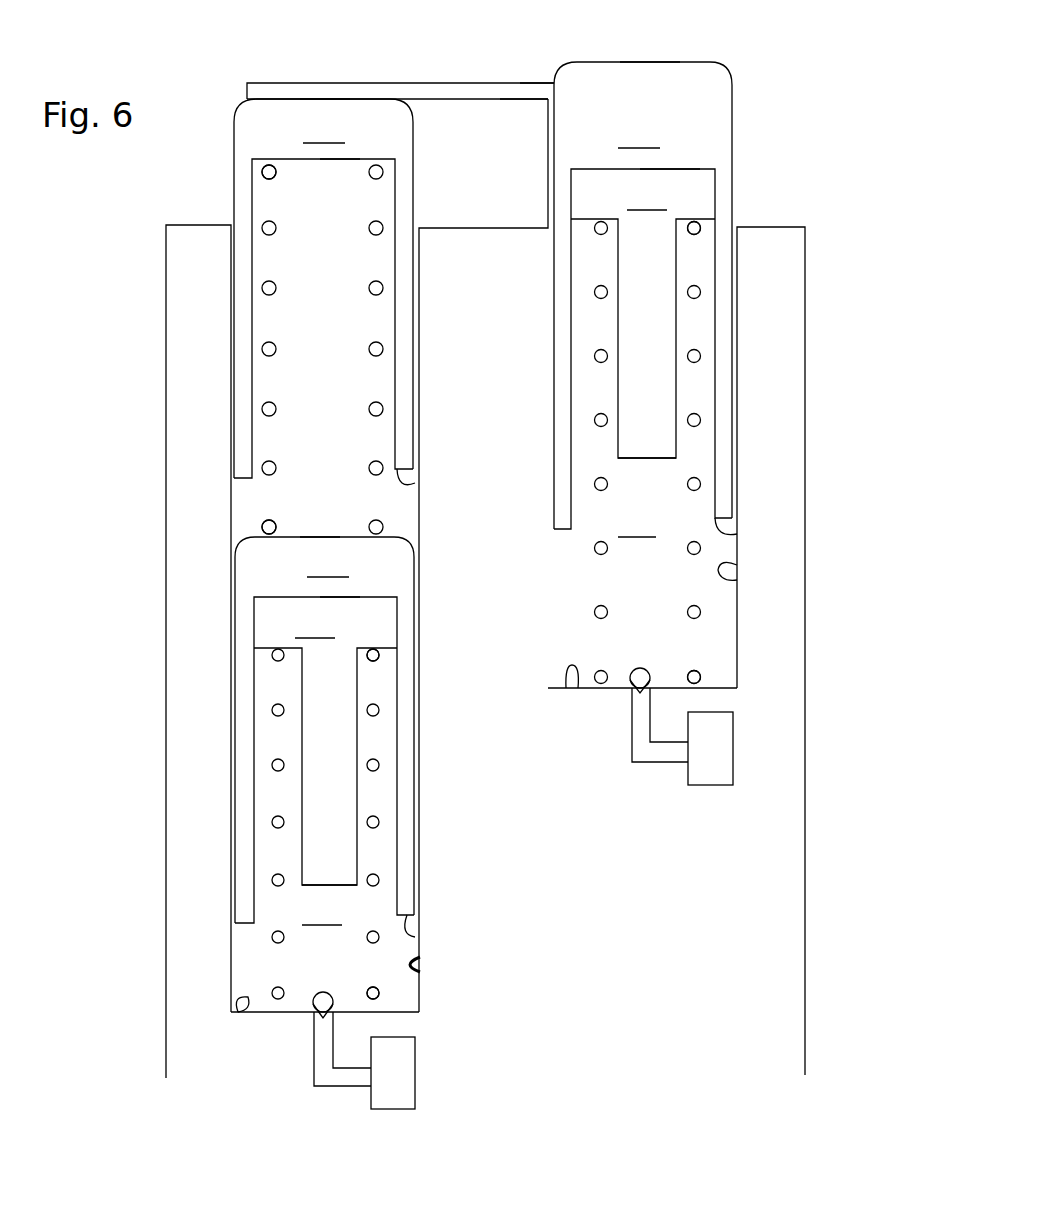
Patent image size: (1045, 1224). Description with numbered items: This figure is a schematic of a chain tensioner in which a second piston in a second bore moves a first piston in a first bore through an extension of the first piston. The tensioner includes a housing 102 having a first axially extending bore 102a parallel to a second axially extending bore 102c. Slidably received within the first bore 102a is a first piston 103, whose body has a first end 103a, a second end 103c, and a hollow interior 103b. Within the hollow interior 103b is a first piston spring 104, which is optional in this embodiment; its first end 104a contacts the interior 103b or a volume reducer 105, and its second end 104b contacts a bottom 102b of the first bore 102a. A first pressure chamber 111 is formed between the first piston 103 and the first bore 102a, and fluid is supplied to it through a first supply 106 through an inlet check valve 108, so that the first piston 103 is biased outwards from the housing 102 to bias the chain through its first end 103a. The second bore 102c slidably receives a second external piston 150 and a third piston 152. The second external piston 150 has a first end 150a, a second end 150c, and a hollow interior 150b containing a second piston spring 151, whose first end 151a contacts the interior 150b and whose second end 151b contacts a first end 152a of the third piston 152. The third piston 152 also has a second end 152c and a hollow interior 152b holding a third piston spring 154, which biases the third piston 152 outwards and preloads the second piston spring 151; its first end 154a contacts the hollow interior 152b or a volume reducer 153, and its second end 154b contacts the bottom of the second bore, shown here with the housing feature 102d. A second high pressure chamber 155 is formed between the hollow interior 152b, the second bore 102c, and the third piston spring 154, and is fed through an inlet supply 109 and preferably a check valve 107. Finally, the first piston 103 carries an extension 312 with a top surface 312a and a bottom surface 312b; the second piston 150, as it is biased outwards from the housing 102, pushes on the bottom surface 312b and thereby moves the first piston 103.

The housing 102 is at (804, 872).
The first axially extending bore 102a is at (740, 582).
The bottom of the first axially extending bore 102b is at (572, 690).
The second axially extending bore 102c is at (420, 972).
The housing notch 102d is at (245, 1000).
The first piston 103 is at (642, 375).
The first end of the first piston 103a is at (663, 60).
The hollow interior of the first piston 103b is at (673, 172).
The second end of the first piston 103c is at (737, 533).
The first piston spring 104 is at (698, 355).
The first end of the first piston spring 104a is at (700, 228).
The second end of the first piston spring 104b is at (700, 677).
The volume reducer 105 is at (643, 320).
The first supply 106 is at (637, 762).
The check valve 107 is at (315, 1005).
The inlet check valve 108 is at (646, 675).
The inlet supply 109 is at (353, 1090).
The first pressure chamber 111 is at (647, 498).
The second external piston 150 is at (323, 288).
The first end of the second external piston 150a is at (323, 98).
The hollow interior of the second external piston 150b is at (335, 160).
The second end of the second external piston 150c is at (405, 478).
The second piston spring 151 is at (263, 229).
The first end of the second piston spring 151a is at (263, 173).
The second end of the second piston spring 151b is at (262, 529).
The third piston 152 is at (325, 774).
The first end of the third piston 152a is at (332, 538).
The hollow interior of the third piston 152b is at (340, 598).
The second end of the third piston 152c is at (415, 937).
The volume reducer 153 is at (325, 748).
The third piston spring 154 is at (271, 941).
The first end of the third piston spring 154a is at (375, 657).
The second end of the third piston spring 154b is at (380, 997).
The second high pressure chamber 155 is at (329, 905).
The extension 312 is at (425, 91).
The top surface of the extension 312a is at (487, 83).
The bottom surface of the extension 312b is at (520, 100).